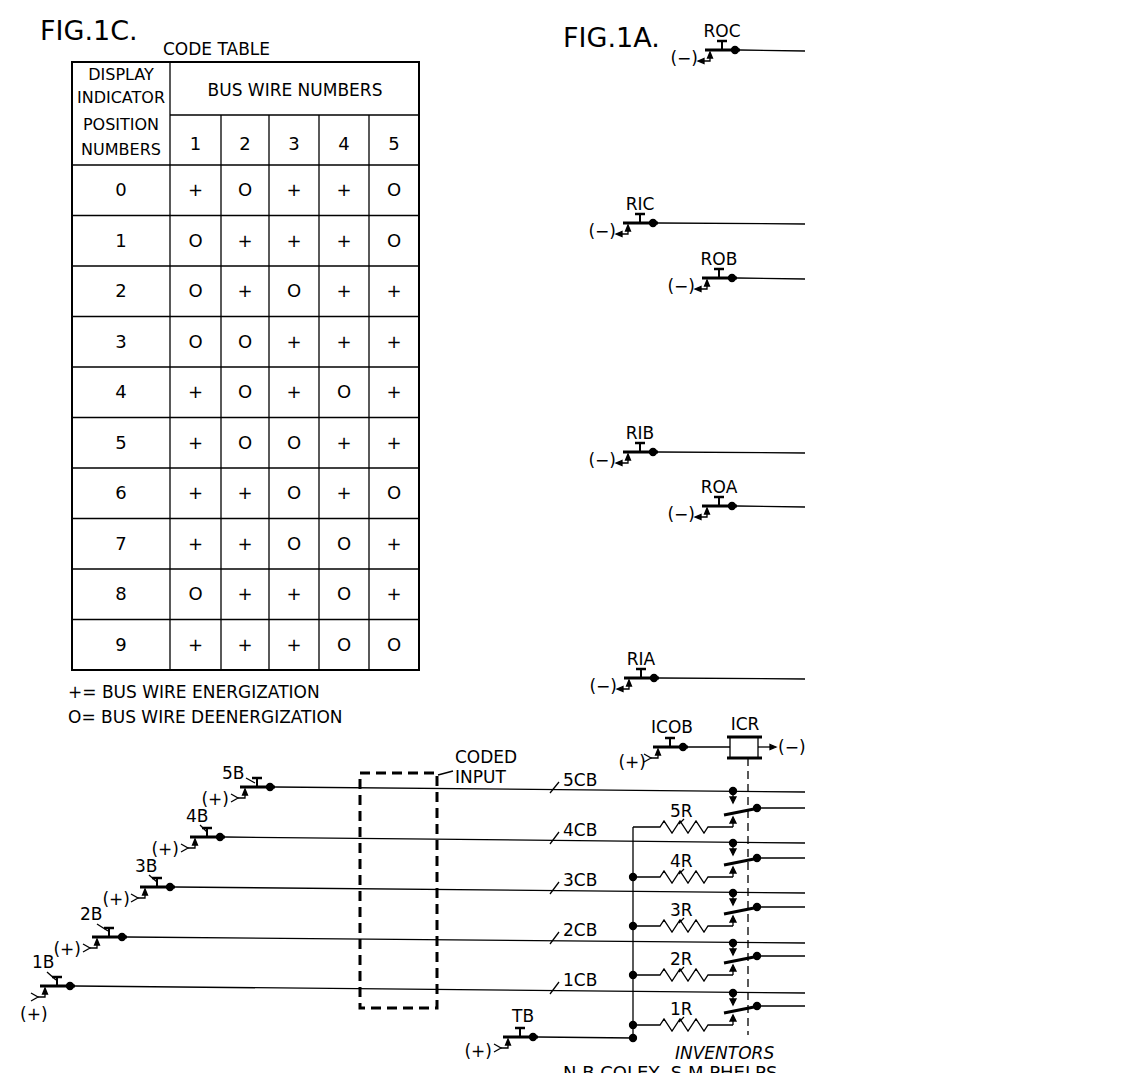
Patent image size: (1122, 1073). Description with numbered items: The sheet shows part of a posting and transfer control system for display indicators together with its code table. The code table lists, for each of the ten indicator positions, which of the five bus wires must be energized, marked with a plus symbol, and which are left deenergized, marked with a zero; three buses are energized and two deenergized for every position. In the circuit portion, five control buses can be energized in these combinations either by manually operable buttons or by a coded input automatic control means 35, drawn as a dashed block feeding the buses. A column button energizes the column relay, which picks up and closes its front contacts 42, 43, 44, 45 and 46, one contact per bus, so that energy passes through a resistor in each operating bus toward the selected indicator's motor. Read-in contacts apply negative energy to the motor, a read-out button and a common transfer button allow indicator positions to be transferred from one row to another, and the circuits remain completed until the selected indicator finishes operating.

The coded input automatic control means 35 is at (361, 1005).
The front contact 42 is at (759, 1009).
The front contact 43 is at (759, 959).
The front contact 44 is at (759, 910).
The front contact 45 is at (759, 861).
The front contact 46 is at (759, 811).